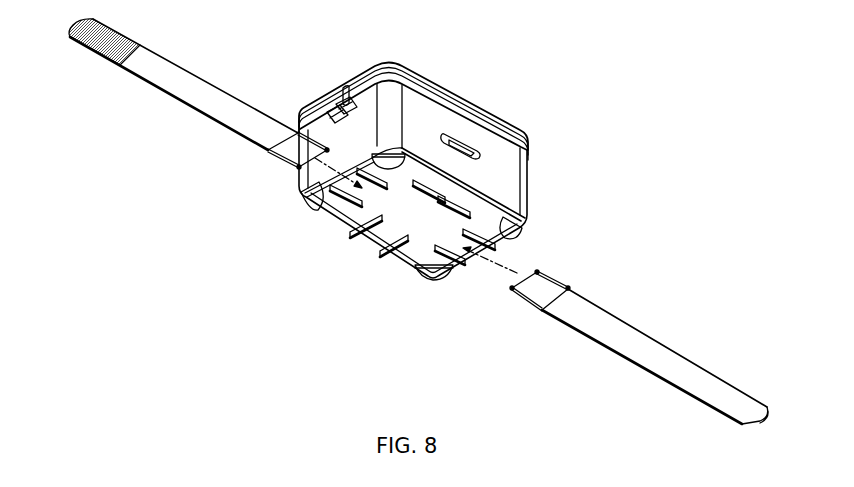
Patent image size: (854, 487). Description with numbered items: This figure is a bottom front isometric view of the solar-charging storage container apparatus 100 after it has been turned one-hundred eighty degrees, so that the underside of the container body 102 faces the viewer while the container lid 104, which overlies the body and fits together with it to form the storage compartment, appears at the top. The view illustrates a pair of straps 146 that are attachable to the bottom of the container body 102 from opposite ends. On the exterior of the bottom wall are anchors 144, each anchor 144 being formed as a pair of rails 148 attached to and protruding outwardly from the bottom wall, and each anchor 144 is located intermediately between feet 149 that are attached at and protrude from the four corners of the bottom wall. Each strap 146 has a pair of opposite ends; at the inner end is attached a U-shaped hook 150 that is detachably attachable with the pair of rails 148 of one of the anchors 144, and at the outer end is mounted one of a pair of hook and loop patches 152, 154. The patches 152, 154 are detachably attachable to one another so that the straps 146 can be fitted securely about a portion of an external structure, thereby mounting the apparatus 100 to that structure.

The solar-charging storage container apparatus 100 is at (699, 60).
The container body 102 is at (532, 200).
The container lid 104 is at (518, 126).
The anchor 144 is at (459, 192).
The strap 146 is at (202, 114).
The rail 148 is at (366, 198).
The foot 149 is at (393, 167).
The U-shaped hook 150 is at (269, 154).
The hook and loop patch 152 is at (755, 400).
The hook and loop patch 154 is at (96, 56).